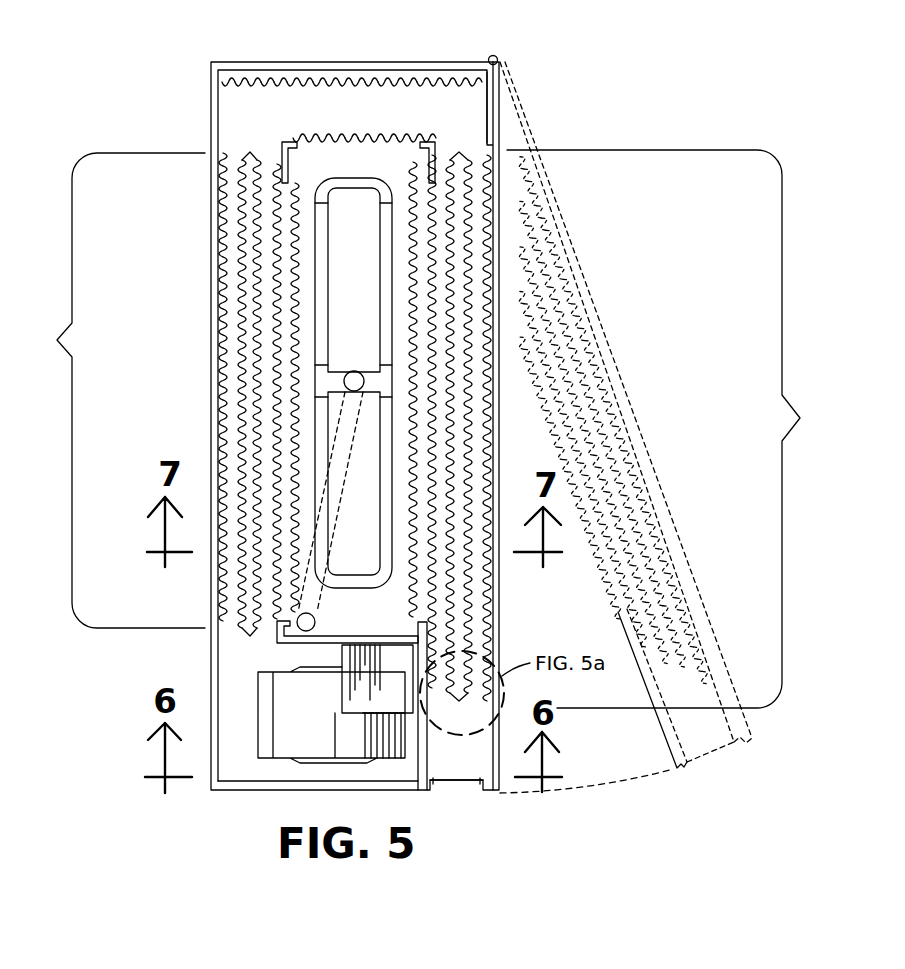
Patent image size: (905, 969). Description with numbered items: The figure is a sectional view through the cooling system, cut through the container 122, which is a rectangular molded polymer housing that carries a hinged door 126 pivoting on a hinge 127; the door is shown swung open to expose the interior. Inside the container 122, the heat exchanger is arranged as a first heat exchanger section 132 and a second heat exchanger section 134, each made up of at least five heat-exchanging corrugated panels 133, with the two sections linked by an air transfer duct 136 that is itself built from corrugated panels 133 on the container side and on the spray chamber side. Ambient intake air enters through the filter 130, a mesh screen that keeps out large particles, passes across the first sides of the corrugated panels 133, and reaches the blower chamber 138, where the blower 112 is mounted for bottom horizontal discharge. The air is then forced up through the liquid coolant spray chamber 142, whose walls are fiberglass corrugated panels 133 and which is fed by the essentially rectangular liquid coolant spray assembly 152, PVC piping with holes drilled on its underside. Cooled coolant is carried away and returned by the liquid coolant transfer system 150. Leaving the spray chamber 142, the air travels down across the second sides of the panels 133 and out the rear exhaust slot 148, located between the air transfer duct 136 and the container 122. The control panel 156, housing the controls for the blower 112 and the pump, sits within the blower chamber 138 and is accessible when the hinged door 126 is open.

The blower 112 is at (290, 745).
The container 122 is at (213, 122).
The hinged door 126 is at (600, 332).
The hinge 127 is at (496, 55).
The filter 130 is at (450, 783).
The first heat exchanger section 132 is at (680, 429).
The heat-exchanging corrugated panel 133 is at (280, 332).
The second heat exchanger section 134 is at (102, 390).
The air transfer duct 136 is at (399, 114).
The blower chamber 138 is at (246, 754).
The liquid coolant spray chamber 142 is at (311, 261).
The rear exhaust slot 148 is at (306, 78).
The liquid coolant transfer system 150 is at (340, 440).
The liquid coolant spray assembly 152 is at (393, 235).
The control panel 156 is at (380, 680).